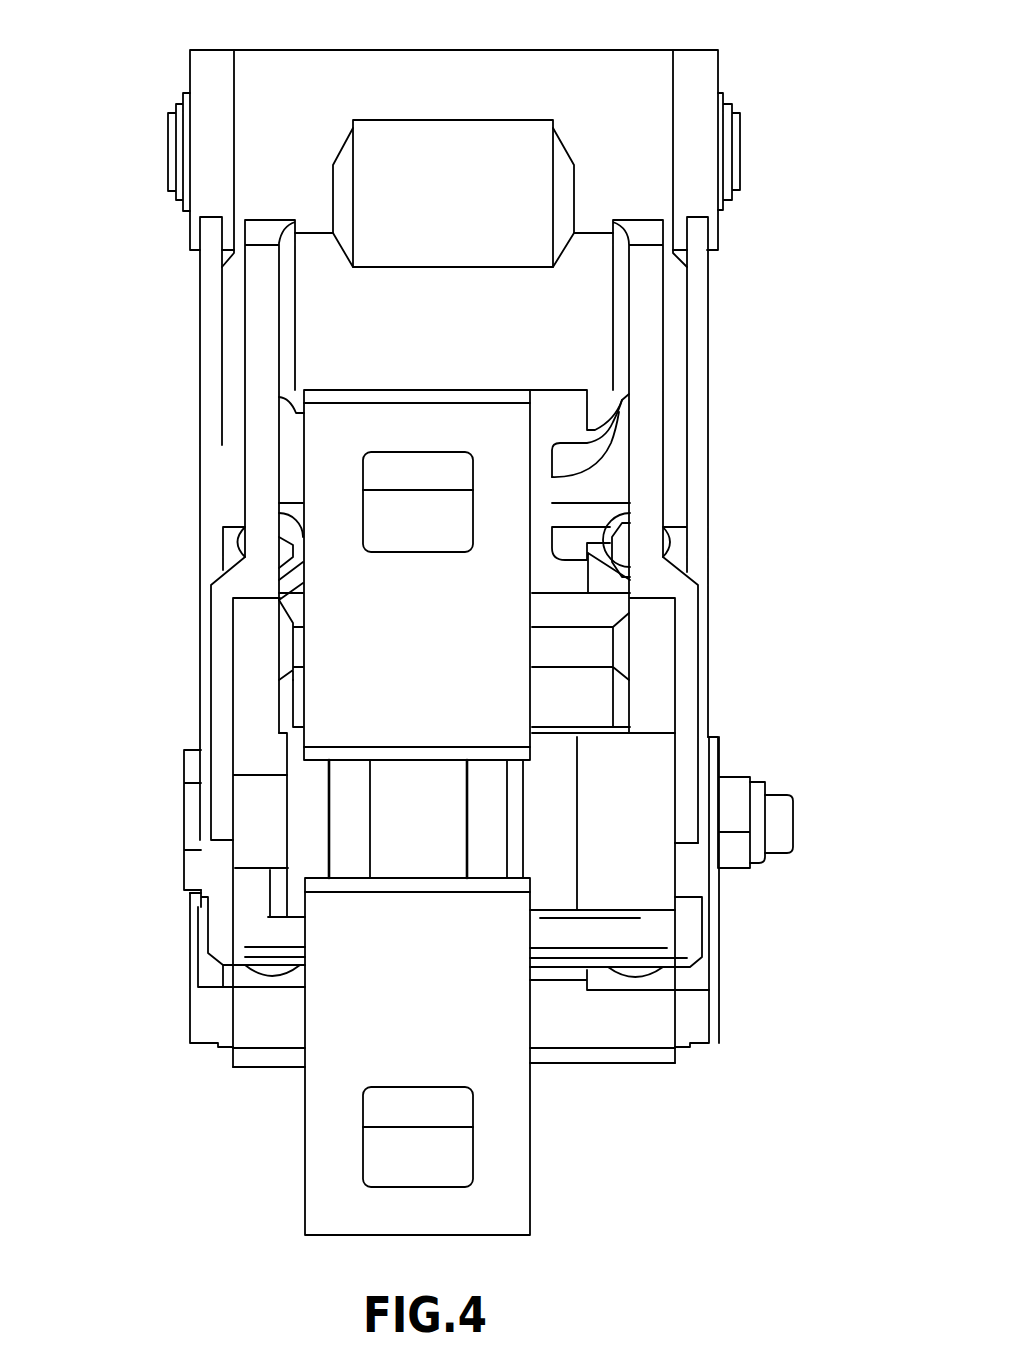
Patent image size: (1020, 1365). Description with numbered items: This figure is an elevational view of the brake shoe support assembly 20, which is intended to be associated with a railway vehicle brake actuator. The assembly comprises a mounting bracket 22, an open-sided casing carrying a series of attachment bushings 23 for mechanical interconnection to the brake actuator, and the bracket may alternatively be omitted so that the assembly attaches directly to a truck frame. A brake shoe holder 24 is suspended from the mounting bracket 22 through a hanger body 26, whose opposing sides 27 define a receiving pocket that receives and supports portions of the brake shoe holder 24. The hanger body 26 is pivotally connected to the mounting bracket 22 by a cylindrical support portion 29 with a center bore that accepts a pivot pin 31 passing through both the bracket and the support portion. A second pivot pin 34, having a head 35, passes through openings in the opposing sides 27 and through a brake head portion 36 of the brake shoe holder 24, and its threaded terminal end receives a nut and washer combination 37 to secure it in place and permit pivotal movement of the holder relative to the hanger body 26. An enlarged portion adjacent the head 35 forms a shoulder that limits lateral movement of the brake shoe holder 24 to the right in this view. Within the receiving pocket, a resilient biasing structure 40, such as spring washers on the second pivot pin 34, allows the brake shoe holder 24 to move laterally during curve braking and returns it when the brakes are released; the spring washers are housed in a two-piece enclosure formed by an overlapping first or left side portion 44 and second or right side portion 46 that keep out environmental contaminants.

The brake shoe support assembly 20 is at (112, 198).
The mounting bracket 22 is at (718, 63).
The attachment bushings 23 is at (672, 547).
The brake shoe holder 24 is at (317, 633).
The hanger body 26 is at (663, 403).
The opposing sides 27 is at (222, 723).
The cylindrical support portion 29 is at (612, 62).
The pivot pin 31 is at (742, 148).
The second pivot pin 34 is at (785, 820).
The head 35 is at (184, 763).
The brake head portion 36 is at (307, 837).
The nut and washer combination 37 is at (735, 873).
The resilient biasing structure 40 is at (636, 802).
The first or left side portion 44 is at (648, 892).
The second or right side portion 46 is at (542, 890).